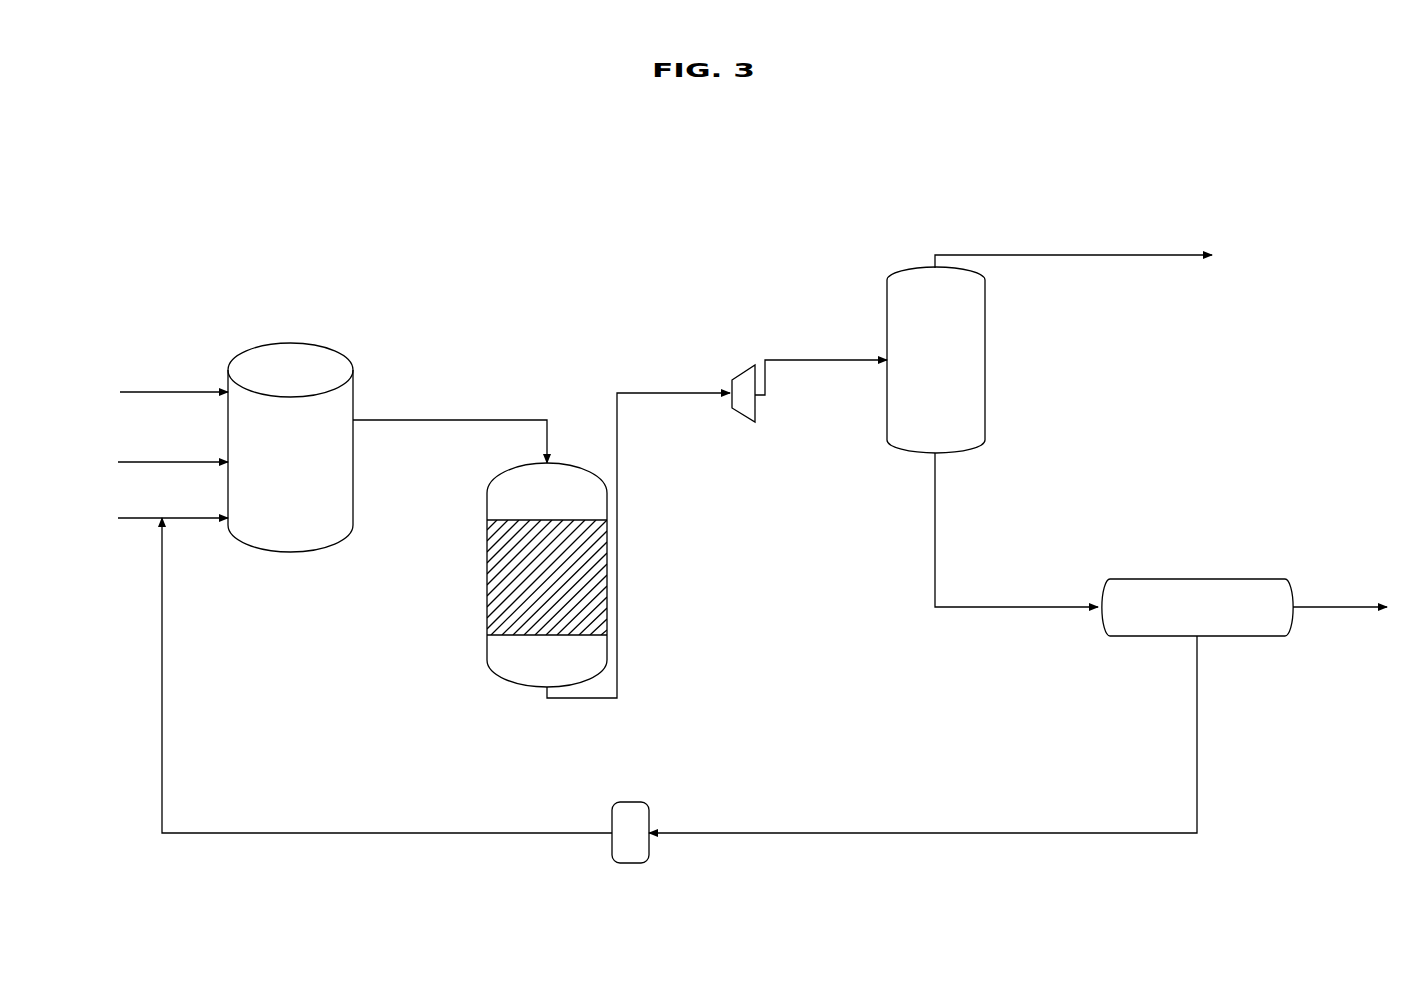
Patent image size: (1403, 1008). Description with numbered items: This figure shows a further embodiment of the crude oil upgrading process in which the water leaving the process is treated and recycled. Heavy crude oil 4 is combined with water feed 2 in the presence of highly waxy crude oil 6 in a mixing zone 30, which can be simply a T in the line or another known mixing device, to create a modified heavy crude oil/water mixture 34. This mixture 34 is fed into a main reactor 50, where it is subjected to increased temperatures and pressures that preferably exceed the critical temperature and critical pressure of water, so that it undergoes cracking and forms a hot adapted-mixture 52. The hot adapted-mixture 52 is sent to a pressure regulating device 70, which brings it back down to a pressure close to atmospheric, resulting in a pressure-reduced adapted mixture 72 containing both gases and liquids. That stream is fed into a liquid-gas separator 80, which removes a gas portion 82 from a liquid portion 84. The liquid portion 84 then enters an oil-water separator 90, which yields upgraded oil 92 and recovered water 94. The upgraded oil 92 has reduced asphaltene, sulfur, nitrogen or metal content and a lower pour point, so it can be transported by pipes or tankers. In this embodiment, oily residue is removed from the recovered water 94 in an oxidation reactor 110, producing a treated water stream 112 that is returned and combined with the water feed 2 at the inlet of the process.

The water feed 2 is at (210, 517).
The heavy crude oil 4 is at (124, 460).
The highly waxy crude oil 6 is at (200, 391).
The mixing zone 30 is at (290, 447).
The modified heavy crude oil/water mixture 34 is at (473, 419).
The main reactor 50 is at (547, 575).
The hot adapted-mixture 52 is at (705, 392).
The pressure regulating device 70 is at (738, 412).
The pressure-reduced adapted mixture 72 is at (789, 357).
The liquid-gas separator 80 is at (936, 360).
The gas portion 82 is at (1100, 253).
The liquid portion 84 is at (1048, 605).
The oil-water separator 90 is at (1197, 607).
The upgraded oil 92 is at (1375, 605).
The recovered water 94 is at (915, 832).
The oxidation reactor 110 is at (630, 802).
The treated water stream 112 is at (493, 829).